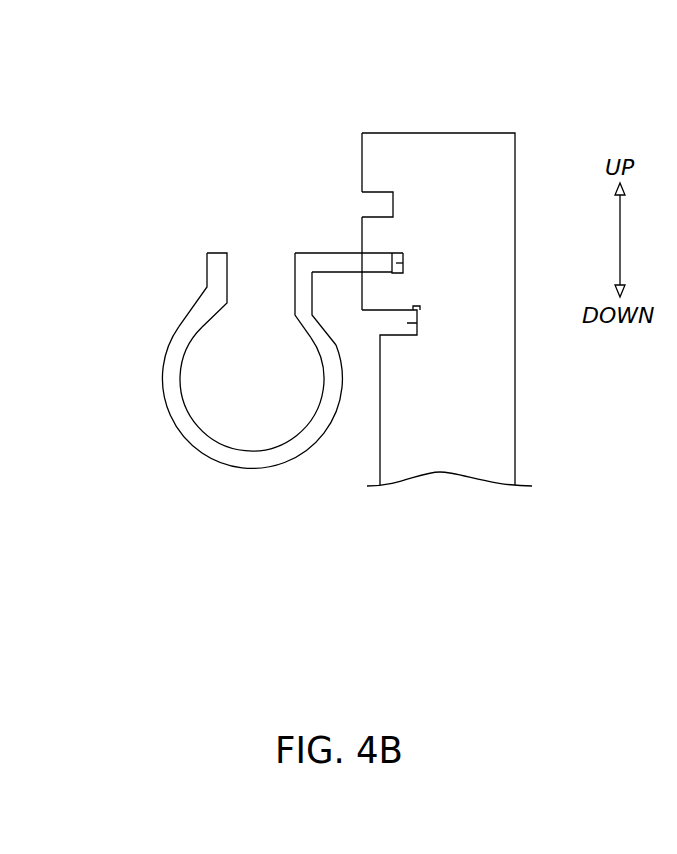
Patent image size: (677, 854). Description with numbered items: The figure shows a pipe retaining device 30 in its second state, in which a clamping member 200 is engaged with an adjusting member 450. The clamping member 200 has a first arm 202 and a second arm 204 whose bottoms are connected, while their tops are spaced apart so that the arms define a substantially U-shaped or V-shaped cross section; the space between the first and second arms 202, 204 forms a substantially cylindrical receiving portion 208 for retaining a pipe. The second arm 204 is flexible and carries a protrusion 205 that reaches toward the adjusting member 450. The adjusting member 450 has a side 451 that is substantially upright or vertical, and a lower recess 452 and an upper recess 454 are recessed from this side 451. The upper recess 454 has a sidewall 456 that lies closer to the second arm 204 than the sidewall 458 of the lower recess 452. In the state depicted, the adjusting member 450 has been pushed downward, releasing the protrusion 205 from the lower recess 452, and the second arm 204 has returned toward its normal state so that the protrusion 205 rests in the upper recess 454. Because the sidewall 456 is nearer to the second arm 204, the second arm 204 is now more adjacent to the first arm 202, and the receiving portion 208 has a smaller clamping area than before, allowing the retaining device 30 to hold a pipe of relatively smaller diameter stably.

The pipe retaining device 30 is at (293, 148).
The clamping member 200 is at (175, 324).
The first arm 202 is at (172, 399).
The second arm 204 is at (302, 428).
The protrusion 205 is at (333, 263).
The receiving portion 208 is at (277, 370).
The adjusting member 450 is at (437, 133).
The side 451 is at (362, 163).
The lower recess 452 is at (418, 327).
The upper recess 454 is at (401, 265).
The sidewall of the upper recess 456 is at (404, 255).
The sidewall of the lower recess 458 is at (419, 311).